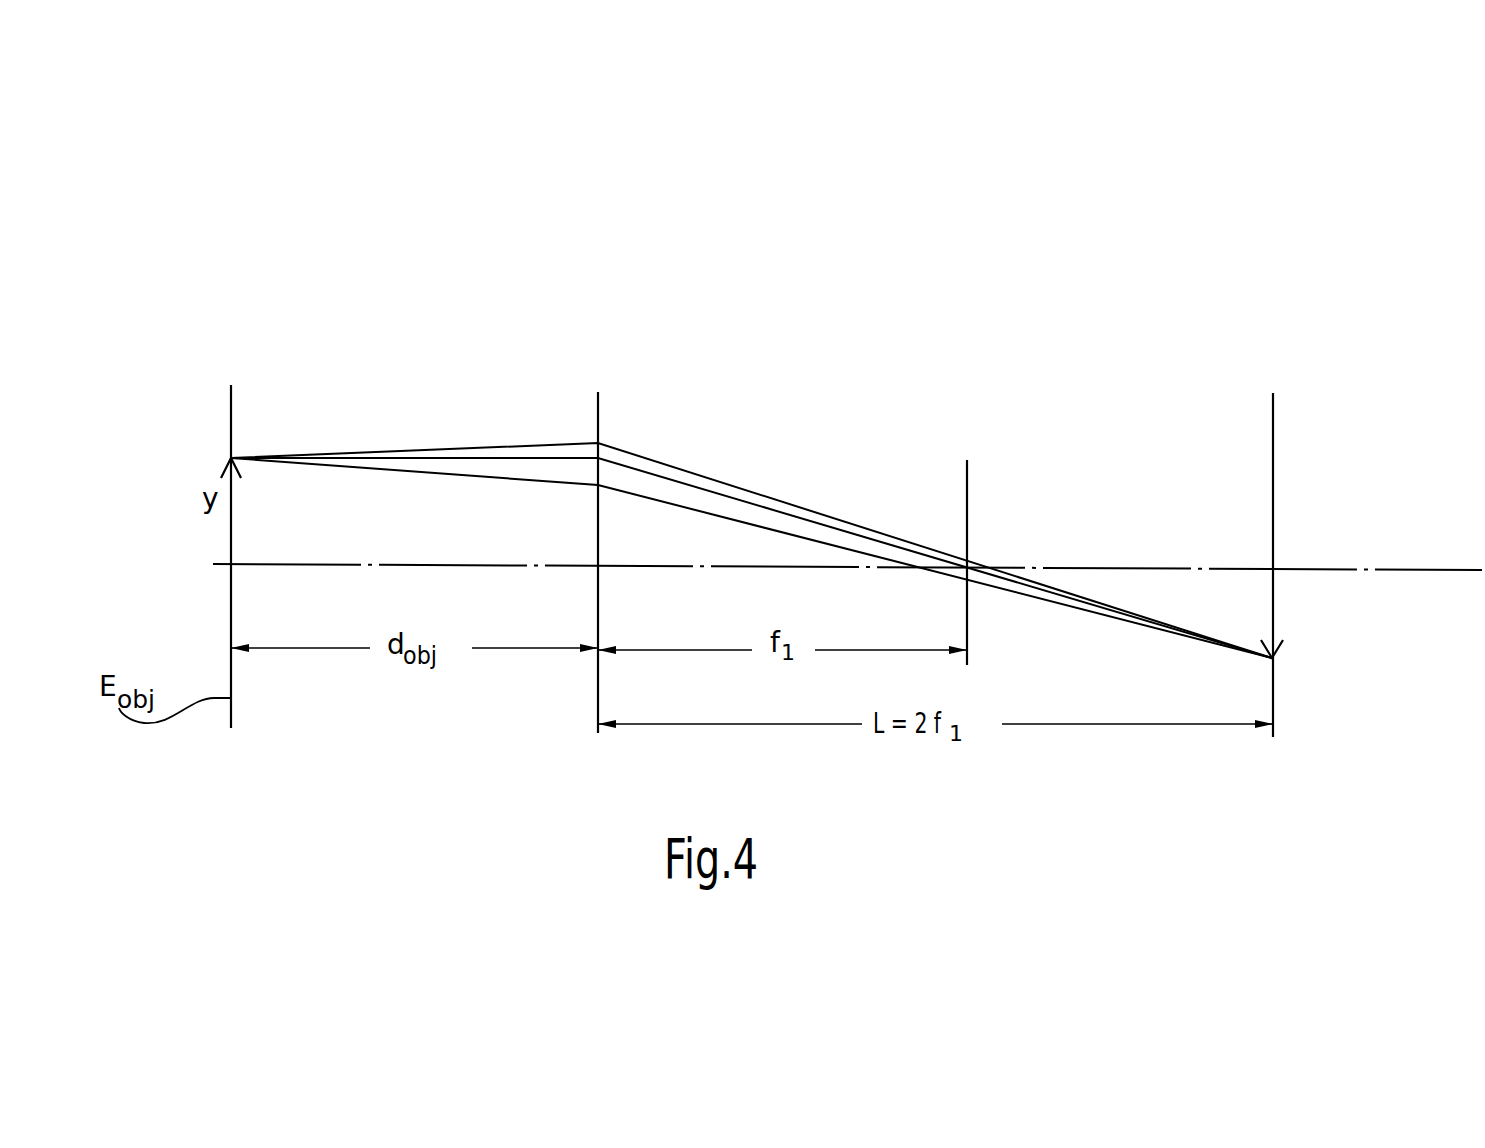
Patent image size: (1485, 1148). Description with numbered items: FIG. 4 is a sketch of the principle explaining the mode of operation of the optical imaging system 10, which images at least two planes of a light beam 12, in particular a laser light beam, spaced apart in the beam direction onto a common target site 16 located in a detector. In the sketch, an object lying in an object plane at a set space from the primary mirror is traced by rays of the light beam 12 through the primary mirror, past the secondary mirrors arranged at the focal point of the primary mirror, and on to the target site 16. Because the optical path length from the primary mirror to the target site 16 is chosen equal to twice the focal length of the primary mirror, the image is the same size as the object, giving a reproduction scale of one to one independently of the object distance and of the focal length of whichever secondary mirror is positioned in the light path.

The optical imaging system 10 is at (690, 322).
The light beam 12 is at (375, 452).
The target site 16 is at (1274, 443).